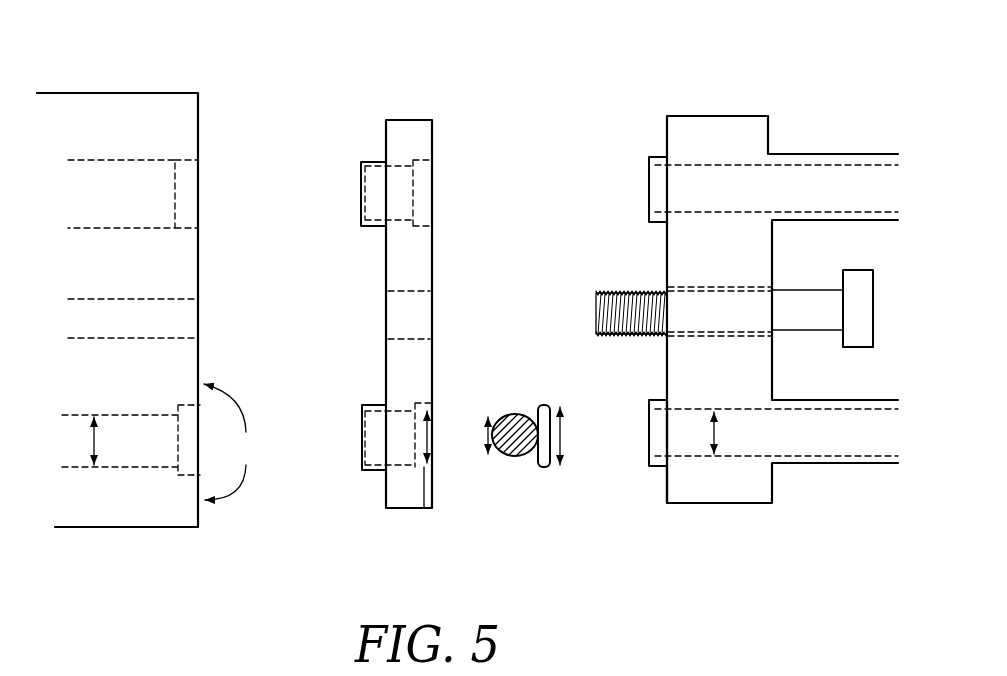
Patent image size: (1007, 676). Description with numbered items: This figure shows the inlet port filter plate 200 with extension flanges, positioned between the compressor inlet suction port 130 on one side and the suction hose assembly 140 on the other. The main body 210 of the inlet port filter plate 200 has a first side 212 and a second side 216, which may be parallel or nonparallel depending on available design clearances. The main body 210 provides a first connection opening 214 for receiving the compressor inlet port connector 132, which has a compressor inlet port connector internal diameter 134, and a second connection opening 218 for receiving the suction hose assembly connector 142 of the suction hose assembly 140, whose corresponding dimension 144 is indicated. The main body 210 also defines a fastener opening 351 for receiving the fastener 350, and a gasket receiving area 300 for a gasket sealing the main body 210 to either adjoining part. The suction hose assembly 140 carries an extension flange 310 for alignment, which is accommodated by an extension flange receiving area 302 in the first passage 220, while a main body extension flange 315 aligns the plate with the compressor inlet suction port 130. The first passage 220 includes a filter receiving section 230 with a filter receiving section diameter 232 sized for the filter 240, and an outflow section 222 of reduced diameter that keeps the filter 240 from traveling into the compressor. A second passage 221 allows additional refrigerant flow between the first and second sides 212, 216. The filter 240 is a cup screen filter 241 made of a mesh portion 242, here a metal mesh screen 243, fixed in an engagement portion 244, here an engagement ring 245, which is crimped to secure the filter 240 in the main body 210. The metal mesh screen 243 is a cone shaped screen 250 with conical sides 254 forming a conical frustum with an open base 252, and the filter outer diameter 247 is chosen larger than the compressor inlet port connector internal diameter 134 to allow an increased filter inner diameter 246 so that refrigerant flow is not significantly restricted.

The compressor inlet suction port 130 is at (137, 57).
The compressor inlet port connector 132 is at (231, 442).
The compressor inlet port connector internal diameter 134 is at (95, 438).
The suction hose assembly 140 is at (849, 103).
The suction hose assembly connector 142 is at (651, 476).
The hole dimension 144 is at (716, 432).
The inlet port filter plate 200 is at (461, 307).
The main body 210 is at (425, 270).
The first side 212 is at (355, 258).
The first connection opening 214 is at (341, 423).
The second side 216 is at (450, 235).
The second connection opening 218 is at (440, 409).
The first passage 220 is at (407, 433).
The second passage 221 is at (397, 197).
The outflow section 222 is at (361, 420).
The filter receiving section 230 is at (409, 433).
The filter receiving section diameter 232 is at (430, 431).
The filter 240 is at (520, 434).
The cup screen filter 241 is at (522, 411).
The mesh portion 242 is at (520, 434).
The metal mesh screen 243 is at (520, 434).
The engagement portion 244 is at (588, 402).
The engagement ring 245 is at (540, 404).
The filter inner diameter 246 is at (487, 433).
The filter outer diameter 247 is at (562, 432).
The cone shaped screen 250 is at (520, 434).
The open base 252 is at (521, 464).
The conical sides 254 is at (505, 455).
The gasket receiving area 300 is at (383, 393).
The extension flange receiving area 302 is at (421, 163).
The extension flange 310 is at (651, 150).
The main body extension flange 315 is at (373, 160).
The fastener 350 is at (608, 292).
The fastener opening 351 is at (398, 313).